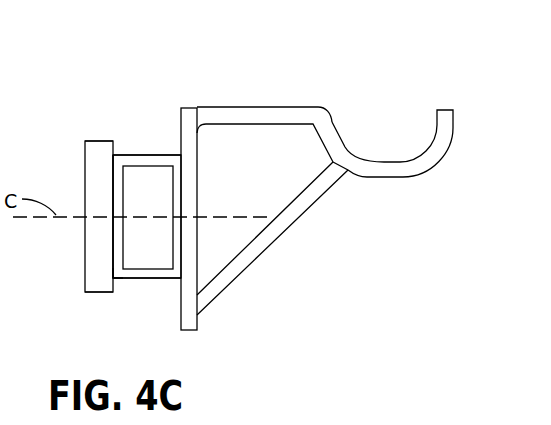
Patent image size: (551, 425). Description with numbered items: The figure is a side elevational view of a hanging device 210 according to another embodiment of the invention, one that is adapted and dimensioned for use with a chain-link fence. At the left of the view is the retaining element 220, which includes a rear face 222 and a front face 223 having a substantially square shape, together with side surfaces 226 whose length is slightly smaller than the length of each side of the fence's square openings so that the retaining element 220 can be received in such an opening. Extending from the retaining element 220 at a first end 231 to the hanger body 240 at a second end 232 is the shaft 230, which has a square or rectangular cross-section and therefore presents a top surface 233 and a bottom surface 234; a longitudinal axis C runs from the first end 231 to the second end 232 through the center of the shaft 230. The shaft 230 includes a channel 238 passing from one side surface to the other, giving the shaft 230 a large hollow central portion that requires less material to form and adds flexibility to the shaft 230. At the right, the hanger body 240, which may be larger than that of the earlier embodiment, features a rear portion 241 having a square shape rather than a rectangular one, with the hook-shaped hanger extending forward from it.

The hanging device 210 is at (383, 99).
The retaining element 220 is at (76, 134).
The rear face 222 is at (85, 242).
The front face 223 is at (113, 283).
The side surfaces 226 is at (100, 141).
The shaft 230 is at (137, 143).
The first end 231 is at (113, 181).
The second end 232 is at (183, 183).
The top surface 233 is at (158, 154).
The bottom surface 234 is at (167, 279).
The channel 238 is at (165, 252).
The hanger body 240 is at (293, 97).
The rear portion 241 is at (197, 248).